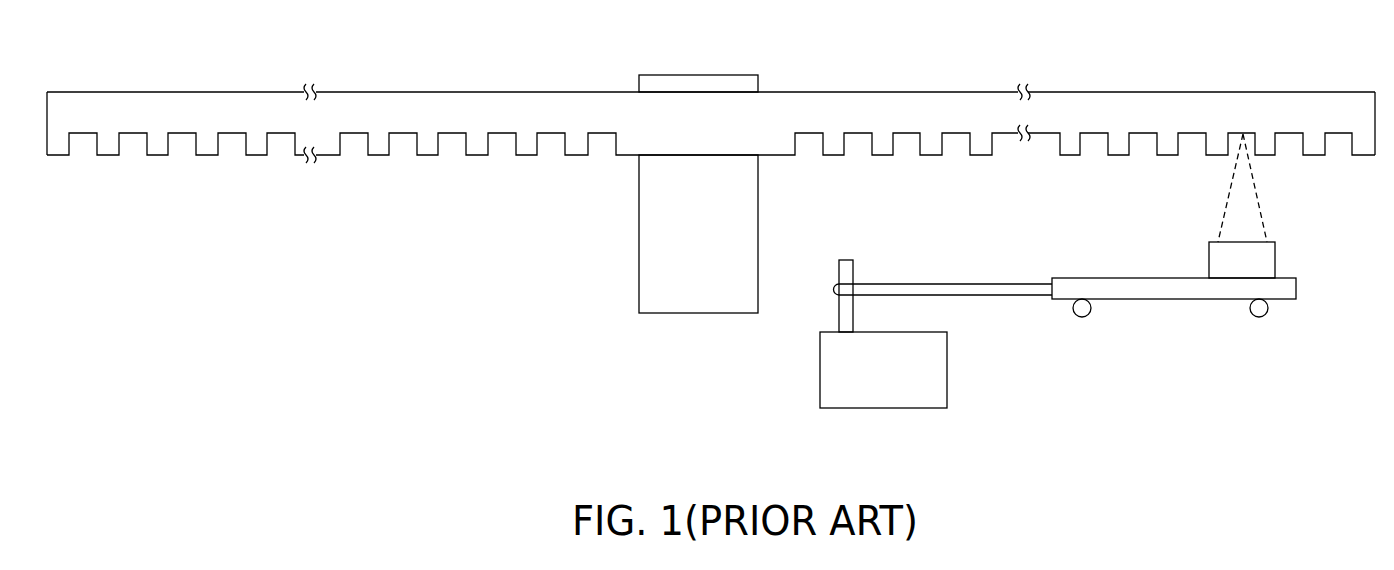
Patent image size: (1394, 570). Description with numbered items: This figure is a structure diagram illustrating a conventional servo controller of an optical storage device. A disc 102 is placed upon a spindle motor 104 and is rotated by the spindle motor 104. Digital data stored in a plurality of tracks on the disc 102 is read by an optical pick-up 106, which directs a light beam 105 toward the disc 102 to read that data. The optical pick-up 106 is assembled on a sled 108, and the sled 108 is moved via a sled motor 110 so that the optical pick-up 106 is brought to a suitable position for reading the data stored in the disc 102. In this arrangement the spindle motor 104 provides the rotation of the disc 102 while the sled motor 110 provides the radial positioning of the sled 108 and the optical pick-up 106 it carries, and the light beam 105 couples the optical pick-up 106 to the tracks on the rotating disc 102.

The disc 102 is at (1122, 107).
The spindle motor 104 is at (639, 221).
The light beam 105 is at (1243, 135).
The optical pick-up 106 is at (1263, 260).
The sled 108 is at (1178, 292).
The sled motor 110 is at (947, 370).